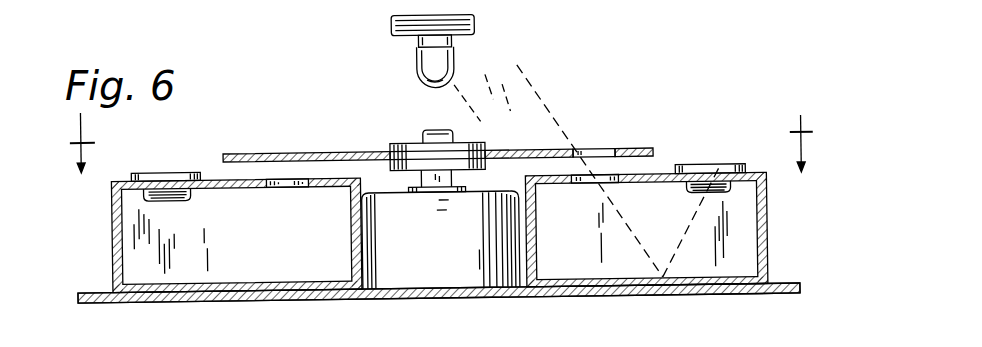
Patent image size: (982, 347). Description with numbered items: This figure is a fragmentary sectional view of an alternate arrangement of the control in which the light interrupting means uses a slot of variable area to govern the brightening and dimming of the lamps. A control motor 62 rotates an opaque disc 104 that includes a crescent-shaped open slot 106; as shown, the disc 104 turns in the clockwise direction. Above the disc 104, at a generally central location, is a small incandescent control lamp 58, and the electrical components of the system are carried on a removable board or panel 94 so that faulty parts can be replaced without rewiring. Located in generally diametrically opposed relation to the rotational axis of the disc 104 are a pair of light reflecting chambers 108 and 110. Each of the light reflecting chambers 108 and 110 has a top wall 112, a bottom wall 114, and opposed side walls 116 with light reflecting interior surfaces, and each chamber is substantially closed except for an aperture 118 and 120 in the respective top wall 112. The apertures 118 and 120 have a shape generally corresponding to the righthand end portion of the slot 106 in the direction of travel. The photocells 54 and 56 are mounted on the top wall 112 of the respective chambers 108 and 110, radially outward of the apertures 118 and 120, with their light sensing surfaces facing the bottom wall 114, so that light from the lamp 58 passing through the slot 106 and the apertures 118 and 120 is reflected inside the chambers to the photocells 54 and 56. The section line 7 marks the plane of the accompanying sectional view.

The section line 7- 7 is at (434, 143).
The photosensitive device 54 is at (158, 186).
The photosensitive device 56 is at (717, 184).
The control lamp 58 is at (425, 67).
The electric motor 62 is at (417, 267).
The panel 94 is at (395, 23).
The opaque disc 104 is at (348, 155).
The slot 106 is at (607, 158).
The light reflecting chamber 108 is at (150, 255).
The light reflecting chamber 110 is at (586, 262).
The top wall 112 is at (215, 178).
The bottom wall 114 is at (227, 285).
The side wall 116 is at (115, 235).
The aperture 118 is at (282, 181).
The aperture 120 is at (605, 185).